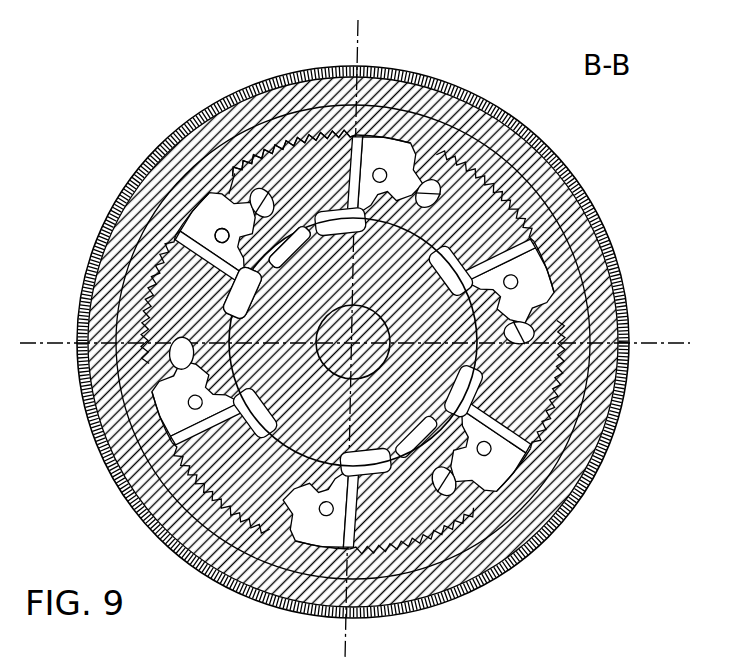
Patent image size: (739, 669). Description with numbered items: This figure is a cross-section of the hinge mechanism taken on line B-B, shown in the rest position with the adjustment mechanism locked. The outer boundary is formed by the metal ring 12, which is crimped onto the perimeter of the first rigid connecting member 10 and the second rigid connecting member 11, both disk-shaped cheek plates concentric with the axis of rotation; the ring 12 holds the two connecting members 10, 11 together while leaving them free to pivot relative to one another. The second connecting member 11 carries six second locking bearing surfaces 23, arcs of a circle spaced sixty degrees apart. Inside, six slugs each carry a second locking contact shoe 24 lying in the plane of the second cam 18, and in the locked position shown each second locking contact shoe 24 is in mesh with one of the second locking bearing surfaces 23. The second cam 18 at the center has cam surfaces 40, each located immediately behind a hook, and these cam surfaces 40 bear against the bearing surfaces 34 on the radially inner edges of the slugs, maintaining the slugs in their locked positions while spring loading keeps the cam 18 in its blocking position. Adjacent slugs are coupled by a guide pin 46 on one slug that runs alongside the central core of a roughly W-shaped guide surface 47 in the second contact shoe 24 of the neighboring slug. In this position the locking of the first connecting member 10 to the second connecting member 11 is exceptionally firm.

The first rigid connecting member 10 is at (578, 222).
The second rigid connecting member 11 is at (573, 283).
The metal ring 12 is at (563, 160).
The second cam 18 is at (275, 326).
The second locking bearing surface 23 is at (240, 170).
The second locking contact shoe 24 is at (272, 160).
The bearing surface 34 is at (293, 222).
The cam surface 40 is at (258, 280).
The guide pin 46 is at (216, 232).
The guide surface 47 is at (140, 372).